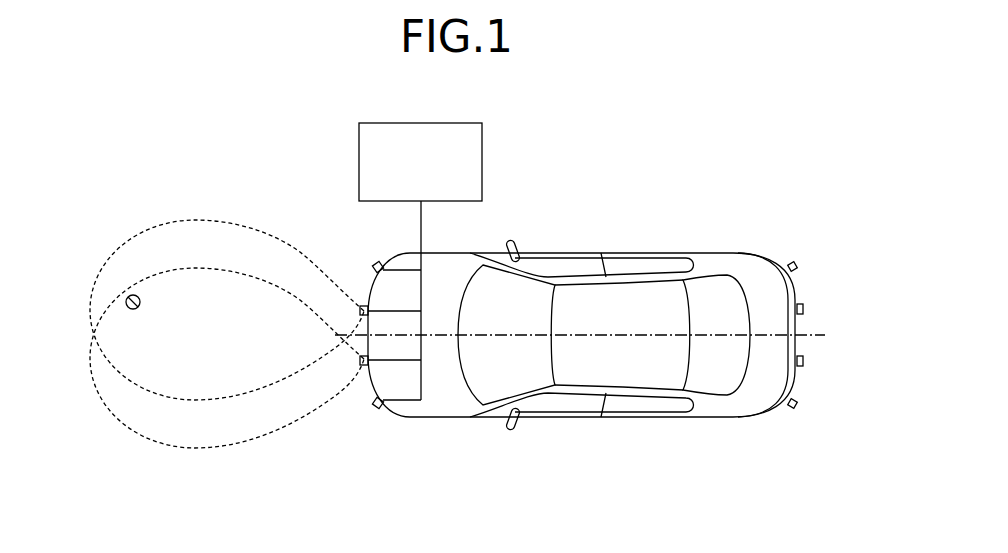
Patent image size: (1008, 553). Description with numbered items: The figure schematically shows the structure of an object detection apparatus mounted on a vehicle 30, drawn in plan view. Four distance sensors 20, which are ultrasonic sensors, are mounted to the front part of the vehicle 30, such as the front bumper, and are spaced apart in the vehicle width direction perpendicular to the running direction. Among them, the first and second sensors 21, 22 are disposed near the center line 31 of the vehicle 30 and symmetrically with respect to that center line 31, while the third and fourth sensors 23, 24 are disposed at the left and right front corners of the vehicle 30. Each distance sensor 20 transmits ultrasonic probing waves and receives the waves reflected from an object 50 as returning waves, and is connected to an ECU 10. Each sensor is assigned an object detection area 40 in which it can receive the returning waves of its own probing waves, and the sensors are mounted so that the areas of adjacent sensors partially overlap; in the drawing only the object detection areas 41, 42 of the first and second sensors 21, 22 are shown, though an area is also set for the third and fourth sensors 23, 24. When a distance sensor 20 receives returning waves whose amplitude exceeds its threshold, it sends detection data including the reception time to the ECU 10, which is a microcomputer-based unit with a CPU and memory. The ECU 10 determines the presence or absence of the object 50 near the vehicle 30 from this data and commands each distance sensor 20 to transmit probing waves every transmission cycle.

The ECU 10 is at (447, 123).
The distance sensor 20 is at (340, 231).
The first sensor 21 is at (361, 304).
The second sensor 22 is at (362, 367).
The third sensor 23 is at (376, 260).
The fourth sensor 24 is at (378, 410).
The vehicle 30 is at (623, 252).
The center line 31 is at (595, 335).
The object detection area 40 is at (227, 341).
The object detection area 41 is at (131, 239).
The object detection area 42 is at (133, 430).
The object 50 is at (127, 297).